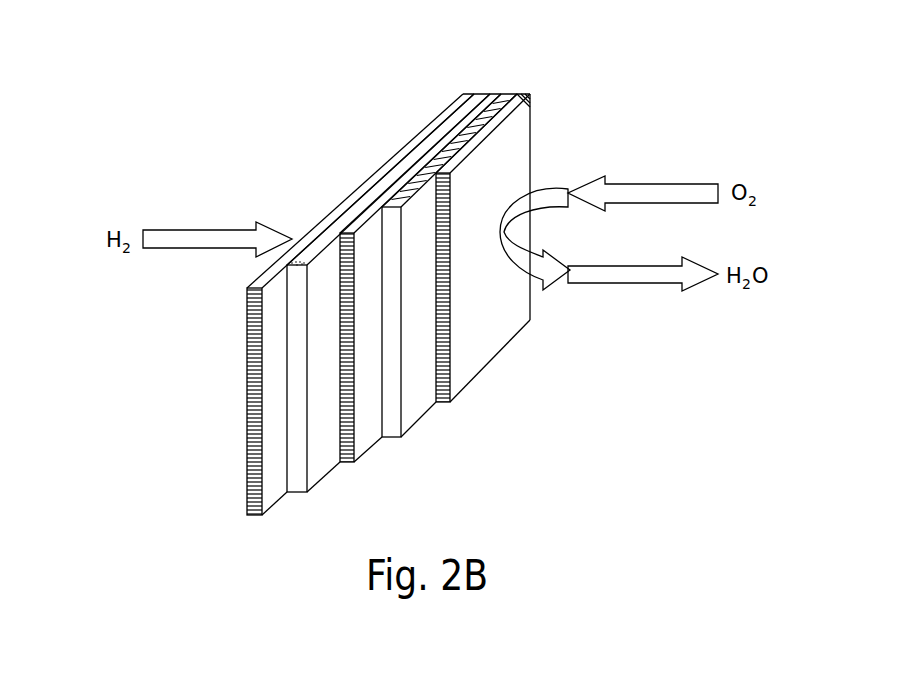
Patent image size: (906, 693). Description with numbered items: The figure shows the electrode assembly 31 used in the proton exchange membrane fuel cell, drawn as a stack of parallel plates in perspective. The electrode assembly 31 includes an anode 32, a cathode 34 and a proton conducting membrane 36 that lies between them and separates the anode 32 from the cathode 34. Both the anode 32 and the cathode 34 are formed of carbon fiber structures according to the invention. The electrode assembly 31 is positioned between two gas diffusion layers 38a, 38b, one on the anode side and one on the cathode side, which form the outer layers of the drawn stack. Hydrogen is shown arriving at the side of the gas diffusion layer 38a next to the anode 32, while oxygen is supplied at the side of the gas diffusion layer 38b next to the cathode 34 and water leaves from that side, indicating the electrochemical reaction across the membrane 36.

The electrode assembly 31 is at (518, 84).
The anode 32 is at (323, 478).
The cathode 34 is at (412, 422).
The proton conducting membrane 36 is at (367, 443).
The gas diffusion layer 38a is at (272, 504).
The gas diffusion layer 38b is at (488, 355).